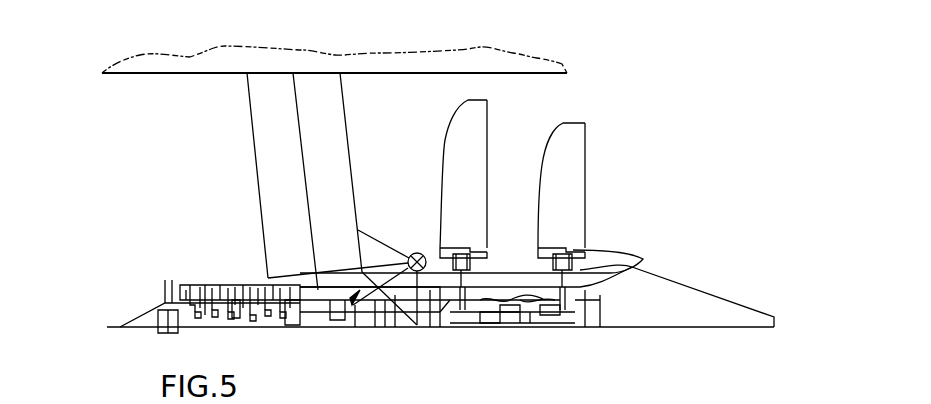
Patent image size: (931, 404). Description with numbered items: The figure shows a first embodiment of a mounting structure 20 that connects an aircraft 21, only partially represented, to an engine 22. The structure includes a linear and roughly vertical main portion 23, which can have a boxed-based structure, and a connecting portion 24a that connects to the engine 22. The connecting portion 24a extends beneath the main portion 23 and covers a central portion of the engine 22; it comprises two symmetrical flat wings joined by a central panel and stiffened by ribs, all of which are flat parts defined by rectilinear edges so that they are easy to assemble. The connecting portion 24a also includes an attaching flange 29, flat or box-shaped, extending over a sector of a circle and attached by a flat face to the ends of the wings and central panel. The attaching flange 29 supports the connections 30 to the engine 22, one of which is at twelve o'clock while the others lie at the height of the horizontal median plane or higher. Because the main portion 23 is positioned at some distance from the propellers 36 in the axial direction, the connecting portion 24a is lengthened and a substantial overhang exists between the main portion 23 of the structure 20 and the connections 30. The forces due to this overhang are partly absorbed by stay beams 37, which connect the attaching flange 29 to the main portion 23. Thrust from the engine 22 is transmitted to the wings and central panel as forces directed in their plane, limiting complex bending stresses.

The mounting structure 20 is at (244, 173).
The aircraft 21 is at (127, 76).
The engine 22 is at (617, 227).
The main portion 23 is at (283, 237).
The connecting portion 24a is at (357, 290).
The attaching flange 29 is at (422, 310).
The connections 30 is at (420, 250).
The propellers 36 is at (478, 130).
The stay beams 37 is at (378, 232).